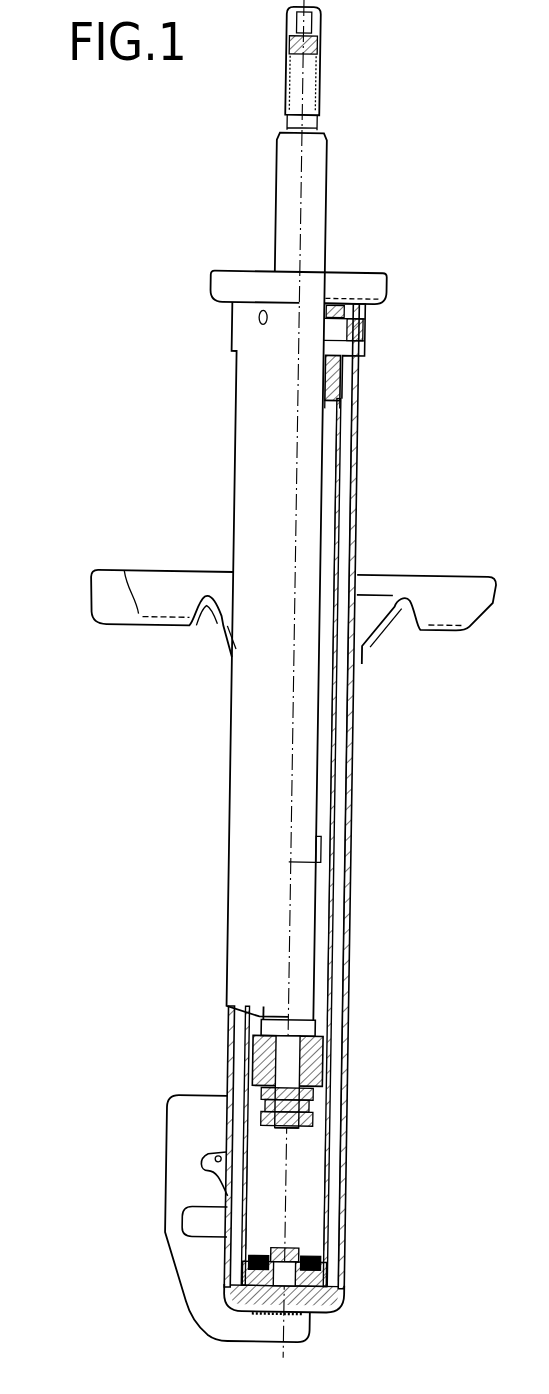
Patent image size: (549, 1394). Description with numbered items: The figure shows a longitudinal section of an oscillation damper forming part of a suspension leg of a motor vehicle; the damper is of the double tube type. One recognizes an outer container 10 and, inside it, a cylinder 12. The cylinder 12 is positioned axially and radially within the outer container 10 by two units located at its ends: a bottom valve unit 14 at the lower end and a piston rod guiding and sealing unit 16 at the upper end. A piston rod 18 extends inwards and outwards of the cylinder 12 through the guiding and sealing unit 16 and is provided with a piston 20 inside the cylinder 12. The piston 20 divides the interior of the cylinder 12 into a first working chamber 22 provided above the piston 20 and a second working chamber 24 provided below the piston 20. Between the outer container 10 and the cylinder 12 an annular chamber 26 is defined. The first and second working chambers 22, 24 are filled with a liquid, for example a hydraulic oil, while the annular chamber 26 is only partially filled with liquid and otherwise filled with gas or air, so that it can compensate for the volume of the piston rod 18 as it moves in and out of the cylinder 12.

The outer container 10 is at (346, 797).
The cylinder 12 is at (322, 918).
The bottom valve unit 14 is at (342, 1268).
The piston rod guiding and sealing unit 16 is at (341, 387).
The piston rod 18 is at (305, 703).
The piston 20 is at (250, 1048).
The first working chamber 22 is at (347, 940).
The second working chamber 24 is at (310, 1182).
The annular chamber 26 is at (343, 965).